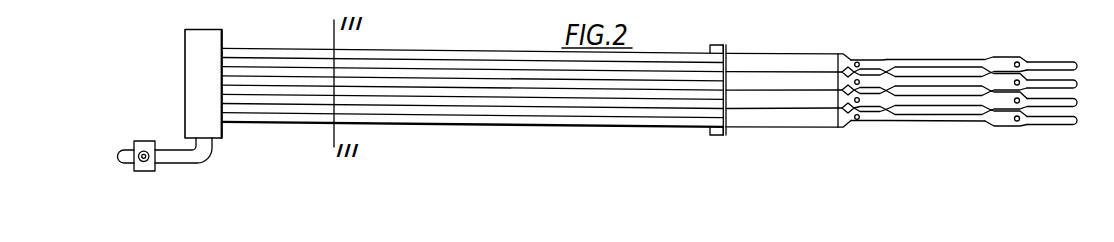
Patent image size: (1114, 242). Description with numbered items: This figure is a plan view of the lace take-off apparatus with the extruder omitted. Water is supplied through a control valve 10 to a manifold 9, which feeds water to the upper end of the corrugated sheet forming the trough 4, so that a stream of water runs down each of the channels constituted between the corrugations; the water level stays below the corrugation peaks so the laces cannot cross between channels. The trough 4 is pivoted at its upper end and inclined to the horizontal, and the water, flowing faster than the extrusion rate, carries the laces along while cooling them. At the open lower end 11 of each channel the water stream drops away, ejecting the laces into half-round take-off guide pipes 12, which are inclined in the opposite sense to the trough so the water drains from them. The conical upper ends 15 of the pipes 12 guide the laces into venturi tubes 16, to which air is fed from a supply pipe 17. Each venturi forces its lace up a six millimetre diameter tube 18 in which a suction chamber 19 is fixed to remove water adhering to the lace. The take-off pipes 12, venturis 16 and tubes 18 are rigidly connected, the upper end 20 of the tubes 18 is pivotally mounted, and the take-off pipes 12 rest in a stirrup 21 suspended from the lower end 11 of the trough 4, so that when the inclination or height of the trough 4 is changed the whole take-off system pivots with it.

The trough 4 is at (467, 51).
The manifold 9 is at (185, 65).
The control valve 10 is at (145, 141).
The lower end of each channel 11 is at (715, 77).
The take-off guide pipes 12 is at (788, 128).
The upper ends of pipes 15 is at (847, 58).
The venturi tubes 16 is at (869, 60).
The supply pipe 17 is at (859, 120).
The tube 18 is at (947, 60).
The suction chamber 19 is at (1005, 62).
The upper end of tubes 20 is at (1057, 59).
The stirrup 21 is at (720, 133).